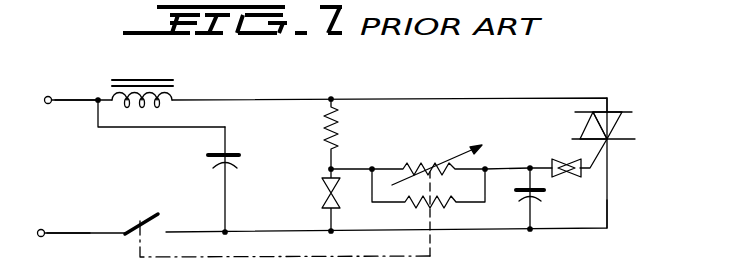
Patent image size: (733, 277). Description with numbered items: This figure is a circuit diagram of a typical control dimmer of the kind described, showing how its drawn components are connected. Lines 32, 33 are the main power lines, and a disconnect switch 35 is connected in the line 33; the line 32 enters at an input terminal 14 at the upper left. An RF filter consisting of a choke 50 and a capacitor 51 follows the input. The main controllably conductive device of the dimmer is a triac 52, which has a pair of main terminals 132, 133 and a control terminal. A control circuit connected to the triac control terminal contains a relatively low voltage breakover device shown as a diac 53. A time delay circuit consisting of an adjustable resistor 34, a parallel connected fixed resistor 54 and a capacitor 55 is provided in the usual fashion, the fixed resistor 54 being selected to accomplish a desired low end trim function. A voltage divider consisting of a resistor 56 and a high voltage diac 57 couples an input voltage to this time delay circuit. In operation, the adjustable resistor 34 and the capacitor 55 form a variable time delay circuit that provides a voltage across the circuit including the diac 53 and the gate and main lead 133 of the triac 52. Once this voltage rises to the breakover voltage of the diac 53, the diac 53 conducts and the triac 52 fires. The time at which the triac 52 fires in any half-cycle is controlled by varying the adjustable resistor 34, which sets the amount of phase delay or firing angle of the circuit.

The input line terminal 14 is at (70, 74).
The line 32 is at (80, 101).
The line 33 is at (82, 230).
The disconnect switch 35 is at (160, 225).
The choke 50 is at (176, 93).
The capacitor 51 is at (238, 152).
The resistor 56 is at (345, 135).
The adjustable resistor 34 is at (430, 158).
The high voltage diac 57 is at (325, 181).
The fixed resistor 54 is at (453, 208).
The triac 52 is at (582, 126).
The diac 53 is at (568, 160).
The capacitor 55 is at (545, 192).
The main terminal 132 is at (612, 110).
The main terminal 133 is at (614, 204).